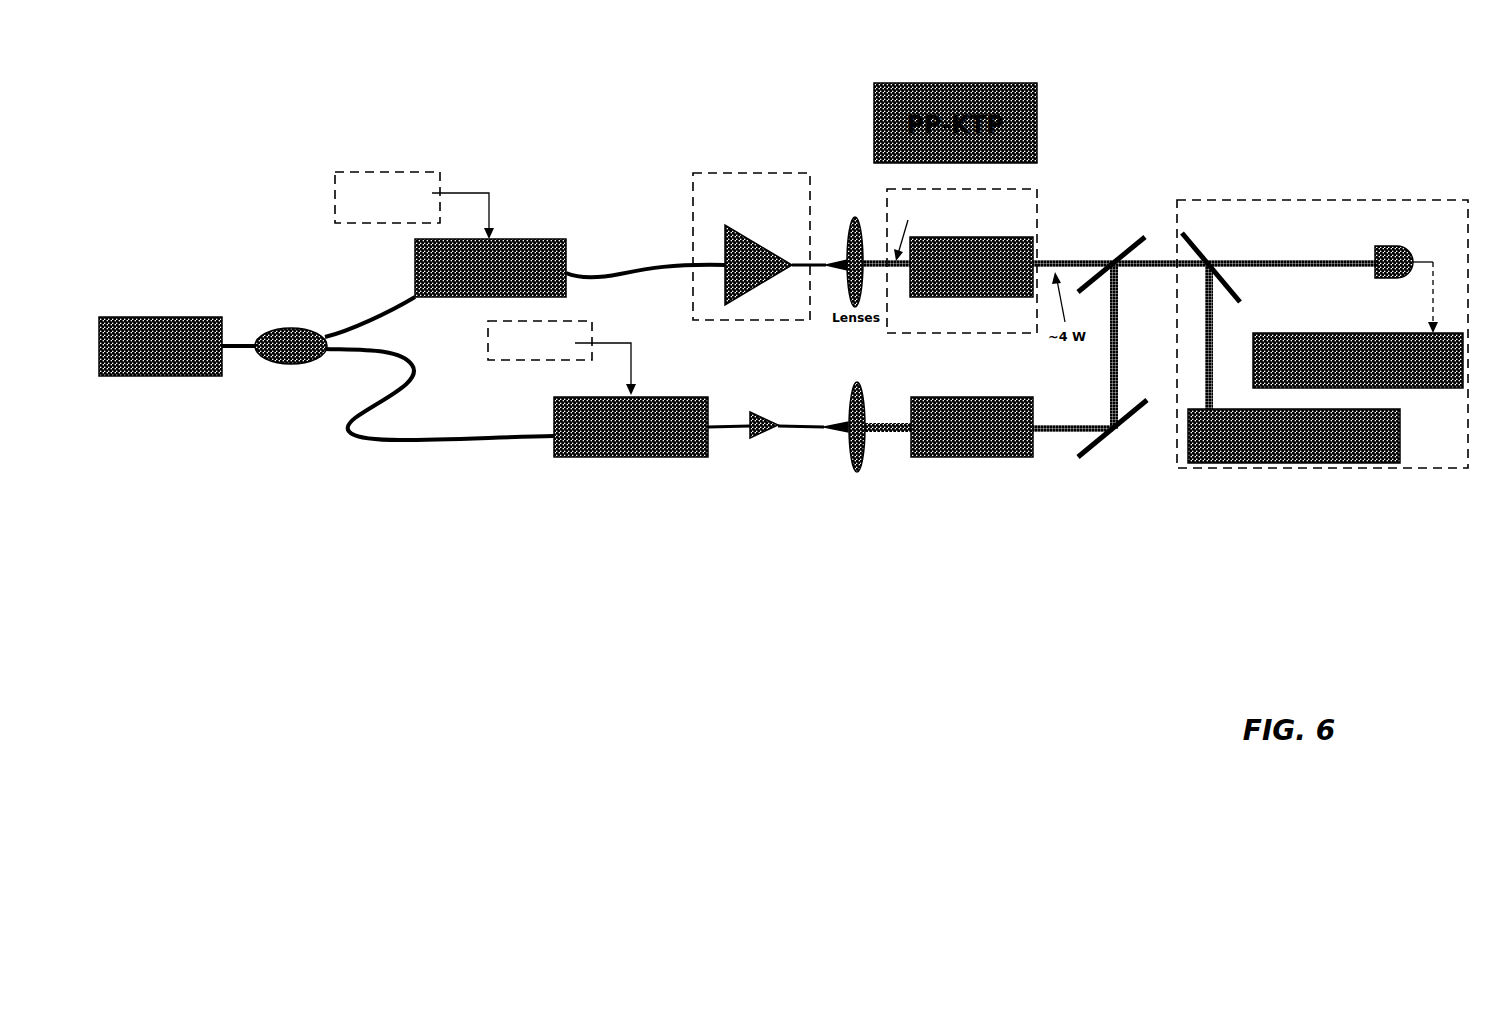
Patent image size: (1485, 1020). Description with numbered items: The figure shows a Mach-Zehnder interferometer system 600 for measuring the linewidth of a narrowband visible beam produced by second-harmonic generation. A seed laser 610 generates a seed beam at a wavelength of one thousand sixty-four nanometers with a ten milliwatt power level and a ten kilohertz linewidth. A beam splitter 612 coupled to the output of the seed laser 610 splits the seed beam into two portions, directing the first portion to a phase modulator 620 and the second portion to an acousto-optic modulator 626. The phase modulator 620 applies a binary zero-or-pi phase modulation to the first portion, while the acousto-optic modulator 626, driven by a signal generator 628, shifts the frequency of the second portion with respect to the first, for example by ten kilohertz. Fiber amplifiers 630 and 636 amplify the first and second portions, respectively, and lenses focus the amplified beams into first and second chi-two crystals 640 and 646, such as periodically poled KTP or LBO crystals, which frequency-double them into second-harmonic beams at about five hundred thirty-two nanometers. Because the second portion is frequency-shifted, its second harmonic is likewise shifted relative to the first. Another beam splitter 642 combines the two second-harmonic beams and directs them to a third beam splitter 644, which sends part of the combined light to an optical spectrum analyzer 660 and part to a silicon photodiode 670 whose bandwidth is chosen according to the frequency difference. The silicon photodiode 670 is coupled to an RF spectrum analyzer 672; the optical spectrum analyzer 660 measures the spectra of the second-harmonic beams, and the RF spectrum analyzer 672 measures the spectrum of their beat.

The Mach-Zehnder interferometer system 600 is at (1136, 157).
The seed laser 610 is at (159, 317).
The beam splitter 612 is at (291, 357).
The phase modulator 620 is at (490, 268).
The acousto-optic modulator 626 is at (521, 314).
The signal generator 628 is at (578, 355).
The fiber amplifier 630 is at (751, 246).
The fiber amplifier 636 is at (770, 404).
The first χ(2) crystal 640 is at (962, 261).
The beam splitter 642 is at (1121, 244).
The third beam splitter 644 is at (1220, 277).
The second χ(2) crystal 646 is at (972, 438).
The optical spectrum analyzer 660 is at (1294, 436).
The silicon photodiode 670 is at (1389, 271).
The radio-frequency (RF) spectrum analyzer 672 is at (1358, 360).